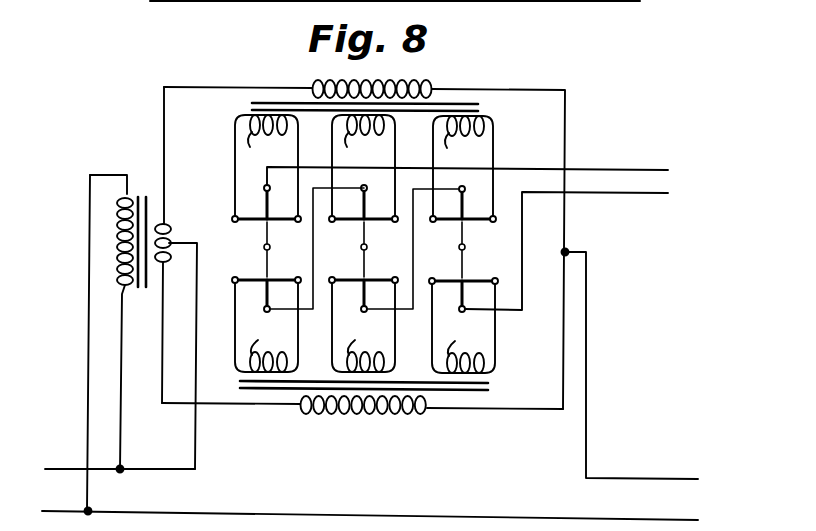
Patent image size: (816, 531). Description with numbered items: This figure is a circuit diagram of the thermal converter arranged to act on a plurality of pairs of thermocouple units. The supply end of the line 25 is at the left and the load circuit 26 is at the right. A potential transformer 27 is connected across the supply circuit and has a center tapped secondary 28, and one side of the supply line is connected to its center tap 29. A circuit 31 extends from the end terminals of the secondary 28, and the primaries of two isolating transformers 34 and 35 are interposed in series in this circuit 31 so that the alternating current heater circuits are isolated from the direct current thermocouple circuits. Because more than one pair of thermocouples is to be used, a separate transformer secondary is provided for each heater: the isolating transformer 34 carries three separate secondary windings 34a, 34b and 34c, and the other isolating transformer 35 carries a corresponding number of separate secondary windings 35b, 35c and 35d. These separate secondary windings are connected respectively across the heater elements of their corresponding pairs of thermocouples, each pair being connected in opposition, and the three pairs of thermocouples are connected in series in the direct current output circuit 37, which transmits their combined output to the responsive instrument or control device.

The supply end of the line 25 is at (108, 485).
The load circuit 26 is at (370, 347).
The potential transformer 27 is at (144, 182).
The center tapped secondary 28 is at (170, 229).
The center tap 29 is at (172, 243).
The circuit 31 is at (565, 133).
The isolating transformer 34 is at (485, 110).
The relay 34a is at (463, 169).
The secondary winding 34b is at (266, 168).
The secondary winding 34c is at (363, 168).
The isolating transformer 35 is at (490, 386).
The secondary winding 35b is at (266, 324).
The secondary winding 35c is at (363, 324).
The secondary winding 35d is at (463, 325).
The output circuit 37 is at (485, 238).